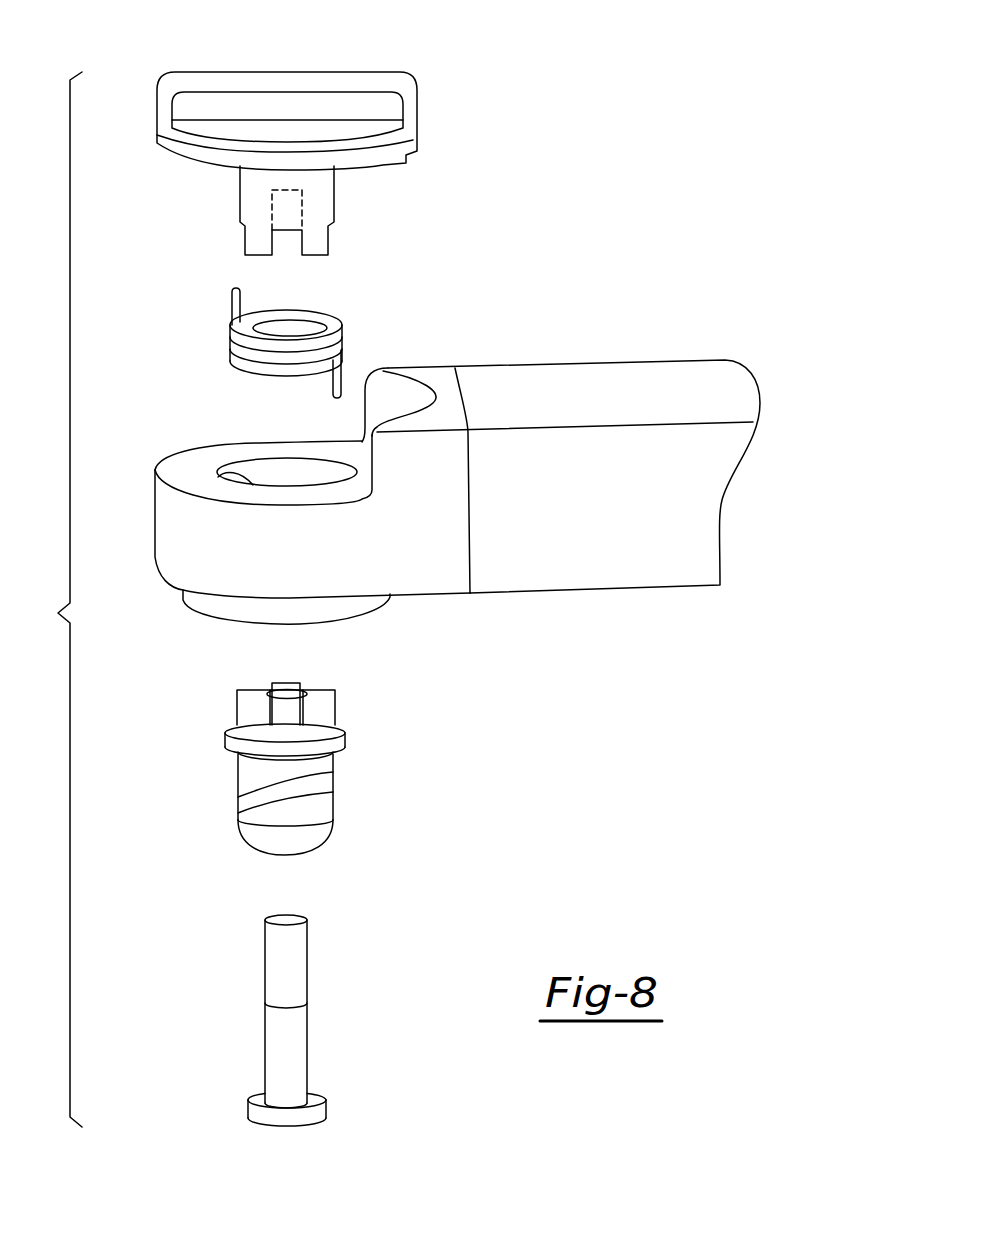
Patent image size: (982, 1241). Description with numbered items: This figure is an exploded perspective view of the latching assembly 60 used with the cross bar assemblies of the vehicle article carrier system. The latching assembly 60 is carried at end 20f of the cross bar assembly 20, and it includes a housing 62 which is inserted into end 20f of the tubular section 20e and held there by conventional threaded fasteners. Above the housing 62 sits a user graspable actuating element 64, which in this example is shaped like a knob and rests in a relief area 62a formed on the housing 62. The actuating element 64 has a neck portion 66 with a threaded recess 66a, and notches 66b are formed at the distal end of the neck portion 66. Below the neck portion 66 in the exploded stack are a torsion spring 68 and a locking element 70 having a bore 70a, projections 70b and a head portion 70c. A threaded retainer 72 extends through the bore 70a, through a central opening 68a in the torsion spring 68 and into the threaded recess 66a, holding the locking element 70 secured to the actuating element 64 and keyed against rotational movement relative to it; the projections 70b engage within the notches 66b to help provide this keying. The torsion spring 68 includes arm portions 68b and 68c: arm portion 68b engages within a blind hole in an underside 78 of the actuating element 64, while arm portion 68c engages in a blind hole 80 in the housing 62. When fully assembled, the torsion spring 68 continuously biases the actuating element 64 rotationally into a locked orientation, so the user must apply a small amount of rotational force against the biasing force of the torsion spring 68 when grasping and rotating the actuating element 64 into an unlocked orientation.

The cross bar assembly 20 is at (685, 356).
The tubular section 20e is at (658, 563).
The end of the cross bar assembly 20f is at (492, 383).
The latching assembly 60 is at (57, 599).
The housing 62 is at (423, 570).
The relief area 62a is at (330, 493).
The actuating element 64 is at (233, 107).
The neck portion 66 is at (336, 184).
The threaded recess 66a is at (272, 207).
The notches 66b is at (284, 233).
The torsion spring 68 is at (232, 340).
The central opening 68a is at (307, 335).
The arm portion 68b is at (238, 303).
The arm portion 68c is at (330, 388).
The locking element 70 is at (330, 767).
The bore 70a is at (280, 683).
The projections 70b is at (300, 684).
The head portion 70c is at (300, 837).
The threaded retainer 72 is at (295, 1060).
The underside of the actuating element 78 is at (174, 160).
The blind hole 80 is at (218, 477).